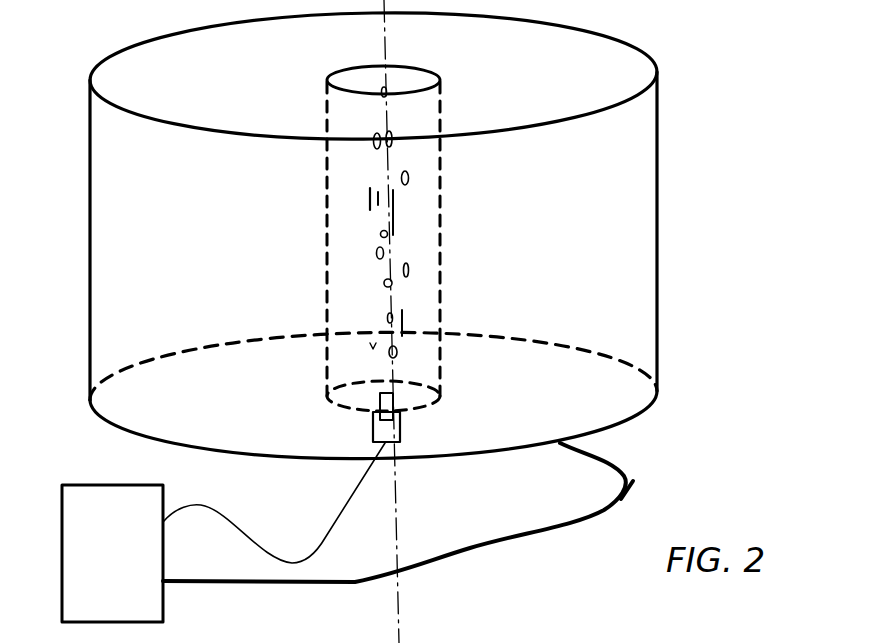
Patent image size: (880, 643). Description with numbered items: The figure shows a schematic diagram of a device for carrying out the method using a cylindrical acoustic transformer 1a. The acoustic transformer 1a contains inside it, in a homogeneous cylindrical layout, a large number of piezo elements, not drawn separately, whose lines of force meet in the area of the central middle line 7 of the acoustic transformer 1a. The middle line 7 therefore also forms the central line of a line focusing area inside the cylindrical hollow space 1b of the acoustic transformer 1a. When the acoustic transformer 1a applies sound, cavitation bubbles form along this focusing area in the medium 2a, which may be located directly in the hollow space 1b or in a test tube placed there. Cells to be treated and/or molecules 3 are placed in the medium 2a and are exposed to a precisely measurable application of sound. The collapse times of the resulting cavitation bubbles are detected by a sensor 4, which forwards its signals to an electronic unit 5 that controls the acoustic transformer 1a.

The acoustic transformer 1a is at (373, 234).
The cylindrical hollow space 1b is at (440, 273).
The medium 2a is at (430, 309).
The cells and/or molecules 3 is at (373, 280).
The sensor 4 is at (400, 416).
The electronic unit 5 is at (112, 553).
The central middle line 7 is at (399, 598).